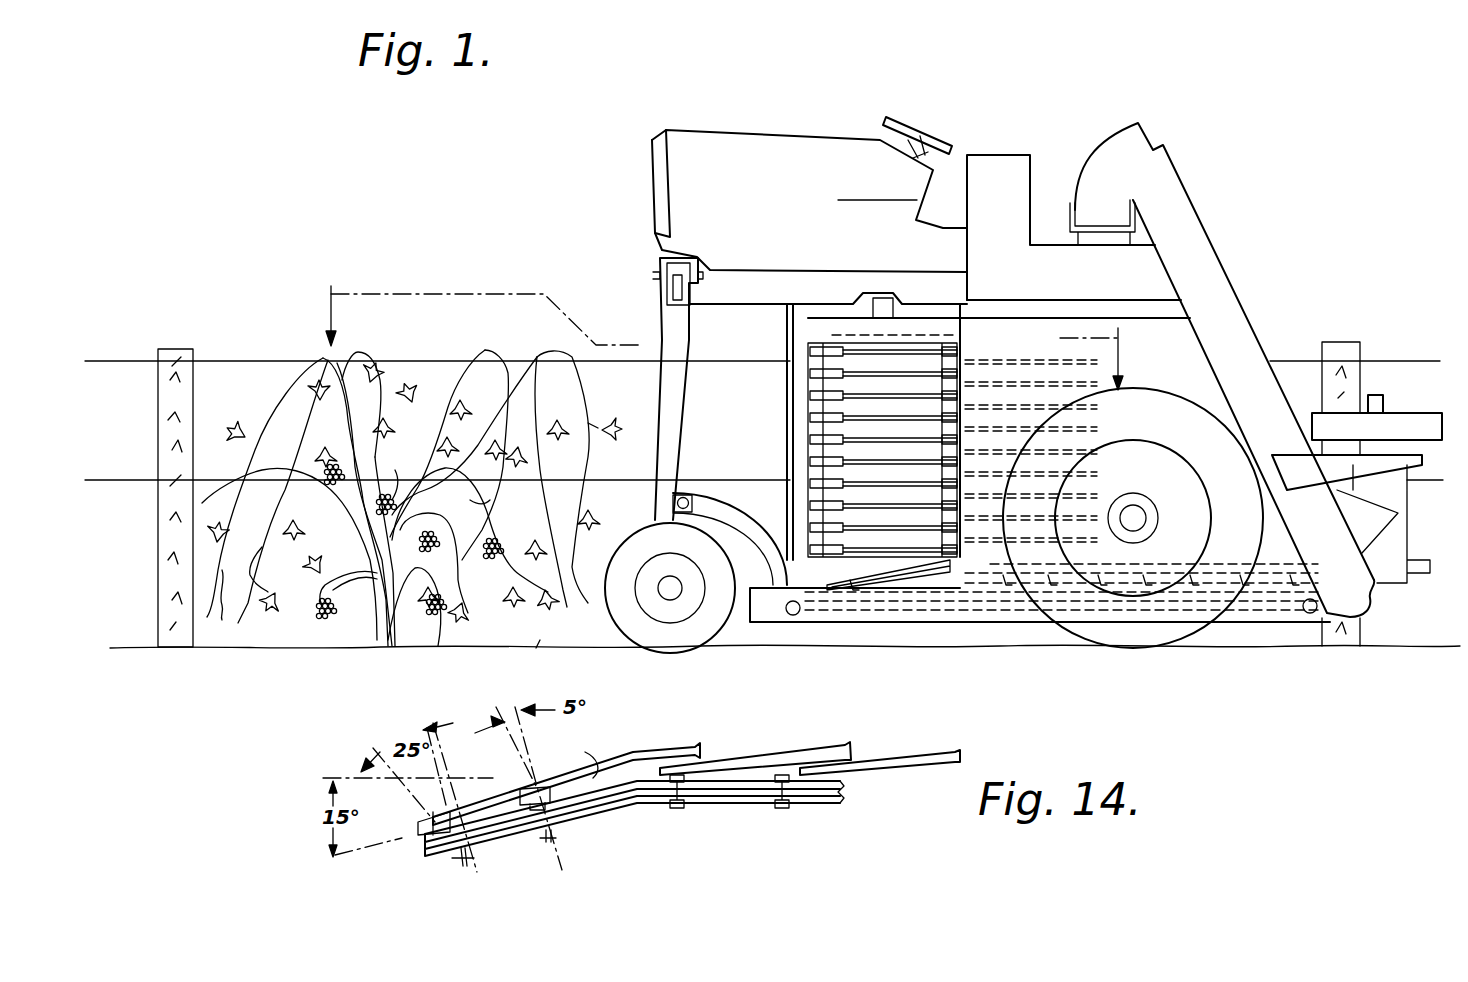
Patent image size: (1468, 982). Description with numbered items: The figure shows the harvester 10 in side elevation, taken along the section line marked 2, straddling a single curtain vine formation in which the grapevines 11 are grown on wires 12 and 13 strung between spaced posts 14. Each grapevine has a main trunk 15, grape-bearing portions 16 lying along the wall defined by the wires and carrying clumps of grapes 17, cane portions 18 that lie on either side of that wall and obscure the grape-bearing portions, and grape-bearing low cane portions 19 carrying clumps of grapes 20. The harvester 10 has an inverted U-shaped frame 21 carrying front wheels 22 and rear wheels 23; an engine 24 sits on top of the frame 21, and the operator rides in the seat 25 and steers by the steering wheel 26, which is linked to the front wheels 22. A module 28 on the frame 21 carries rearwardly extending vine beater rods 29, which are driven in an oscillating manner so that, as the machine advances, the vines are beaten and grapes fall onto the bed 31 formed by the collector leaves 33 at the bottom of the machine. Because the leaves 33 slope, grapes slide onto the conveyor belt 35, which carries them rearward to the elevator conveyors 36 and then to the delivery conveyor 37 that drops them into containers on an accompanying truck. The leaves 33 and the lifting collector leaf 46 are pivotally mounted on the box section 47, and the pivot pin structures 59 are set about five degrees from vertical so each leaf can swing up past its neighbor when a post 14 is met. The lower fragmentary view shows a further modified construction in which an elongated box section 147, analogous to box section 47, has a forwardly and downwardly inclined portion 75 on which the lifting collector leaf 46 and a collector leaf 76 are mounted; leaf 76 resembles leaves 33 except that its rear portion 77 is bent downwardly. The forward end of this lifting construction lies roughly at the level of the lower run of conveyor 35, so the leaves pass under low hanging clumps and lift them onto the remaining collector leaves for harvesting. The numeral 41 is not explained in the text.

In FIG. 1, the harvester 10 is at (995, 122).
In FIG. 1, the grapevines 11 is at (425, 392).
In FIG. 1, the wire 12 is at (737, 363).
In FIG. 1, the wire 13 is at (722, 478).
In FIG. 1, the post 14 is at (170, 350).
In FIG. 1, the main trunk 15 is at (380, 634).
In FIG. 1, the grape-bearing portions 16 is at (410, 480).
In FIG. 1, the clumps of grapes 17 is at (422, 546).
In FIG. 1, the cane portions 18 is at (516, 356).
In FIG. 1, the grape-bearing low cane portions 19 is at (409, 552).
In FIG. 1, the clumps of grapes 20 is at (300, 648).
In FIG. 1, the frame 21 is at (1143, 268).
In FIG. 1, the front wheels 22 is at (668, 636).
In FIG. 1, the rear wheels 23 is at (1117, 630).
In FIG. 1, the engine 24 is at (766, 147).
In FIG. 1, the seat 25 is at (1003, 163).
In FIG. 1, the steering wheel 26 is at (910, 127).
In FIG. 1, the module 28 is at (793, 413).
In FIG. 1, the vine beater rods 29 is at (905, 393).
In FIG. 1, the bed 31 is at (1230, 563).
In FIG. 1, the collector leaves 33 is at (1172, 562).
In FIG. 14, the collector leaves 33 is at (820, 745).
In FIG. 1, the conveyor belt 35 is at (878, 617).
In FIG. 1, the elevator conveyors 36 is at (1350, 562).
In FIG. 1, the delivery conveyor 37 is at (1070, 215).
In FIG. 1, the row centerline 41 is at (539, 648).
In FIG. 1, the lifting collector leaf 46 is at (867, 564).
In FIG. 14, the lifting collector leaf 46 is at (500, 787).
In FIG. 1, the box section 47 is at (1268, 590).
In FIG. 1, the pivot pin structures 59 is at (1032, 622).
In FIG. 14, the inclined portion 75 is at (587, 813).
In FIG. 14, the collector leaf 76 is at (620, 754).
In FIG. 14, the rear portion 77 is at (677, 750).
In FIG. 14, the box section 147 is at (733, 797).
In FIG. 1, the section line 2- 2 is at (721, 334).